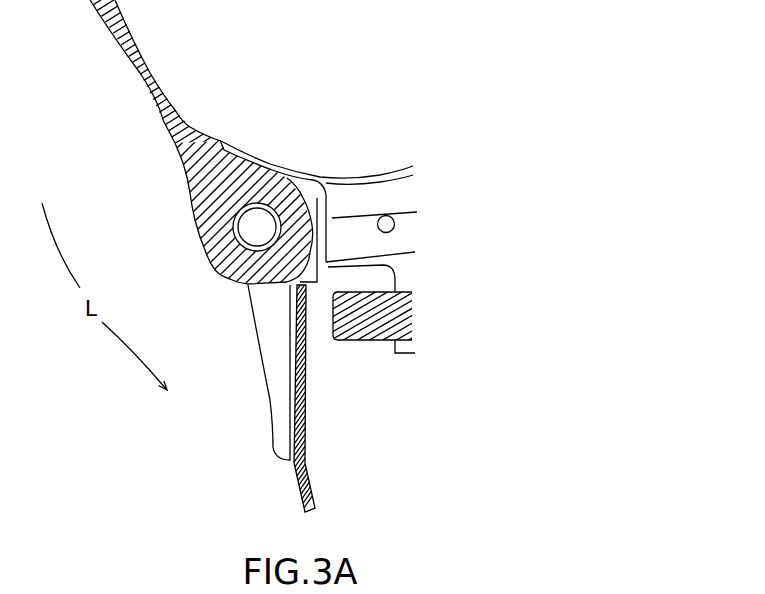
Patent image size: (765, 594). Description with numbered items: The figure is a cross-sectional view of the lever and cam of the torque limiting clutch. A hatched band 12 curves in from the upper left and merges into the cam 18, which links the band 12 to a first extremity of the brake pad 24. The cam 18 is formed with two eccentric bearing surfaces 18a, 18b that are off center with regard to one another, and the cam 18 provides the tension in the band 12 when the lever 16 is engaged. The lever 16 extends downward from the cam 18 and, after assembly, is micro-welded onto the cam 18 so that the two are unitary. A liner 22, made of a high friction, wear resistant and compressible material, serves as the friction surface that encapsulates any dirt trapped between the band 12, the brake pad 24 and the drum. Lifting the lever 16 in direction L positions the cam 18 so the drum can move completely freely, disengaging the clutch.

The band 12 is at (140, 78).
The lever 16 is at (305, 483).
The cam 18 is at (228, 250).
The eccentric bearing surface 18a is at (258, 227).
The eccentric bearing surface 18b is at (244, 207).
The liner 22 is at (367, 175).
The brake pad 24 is at (350, 250).